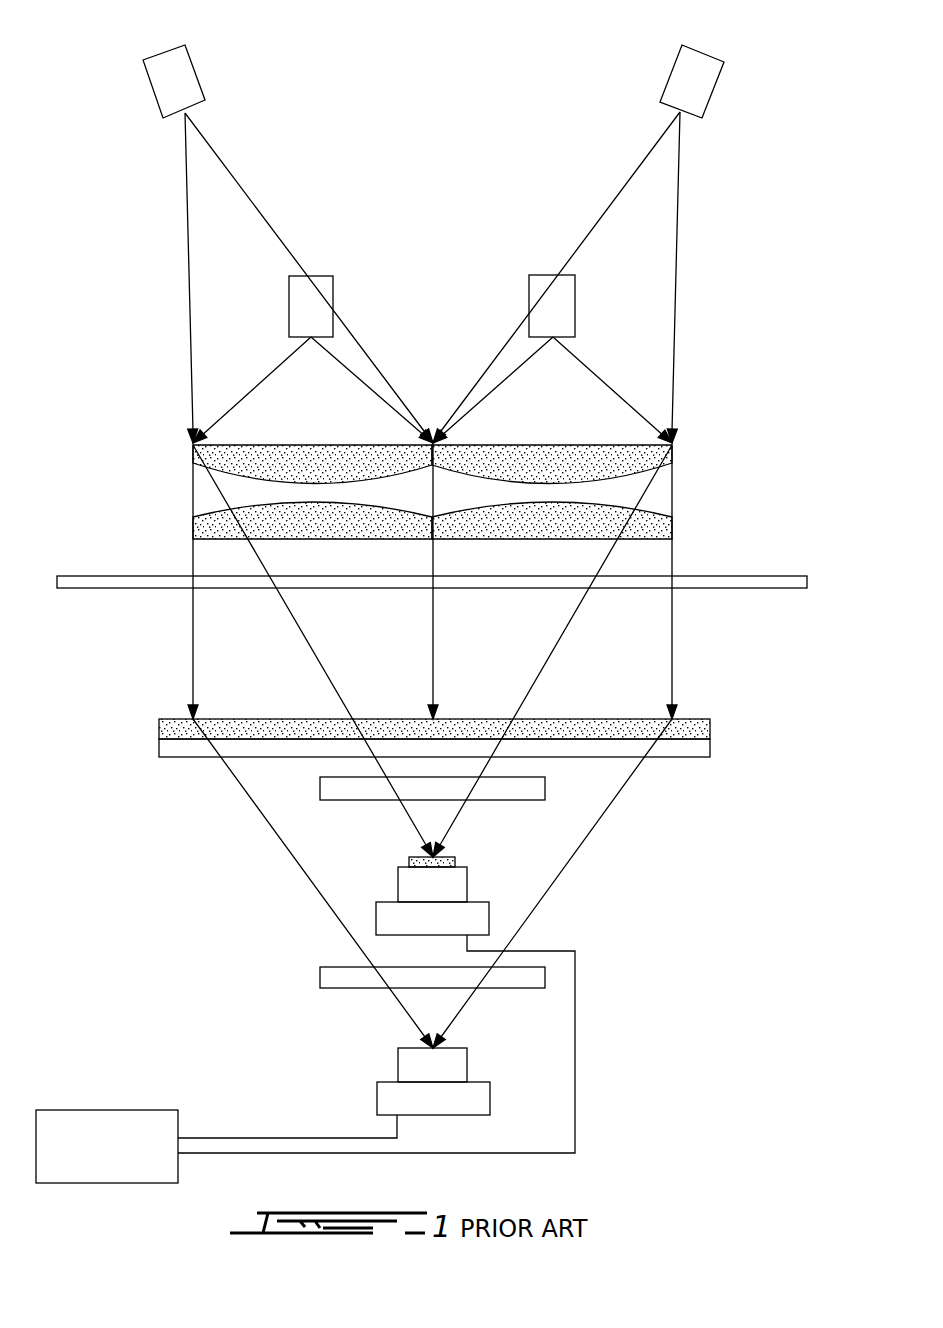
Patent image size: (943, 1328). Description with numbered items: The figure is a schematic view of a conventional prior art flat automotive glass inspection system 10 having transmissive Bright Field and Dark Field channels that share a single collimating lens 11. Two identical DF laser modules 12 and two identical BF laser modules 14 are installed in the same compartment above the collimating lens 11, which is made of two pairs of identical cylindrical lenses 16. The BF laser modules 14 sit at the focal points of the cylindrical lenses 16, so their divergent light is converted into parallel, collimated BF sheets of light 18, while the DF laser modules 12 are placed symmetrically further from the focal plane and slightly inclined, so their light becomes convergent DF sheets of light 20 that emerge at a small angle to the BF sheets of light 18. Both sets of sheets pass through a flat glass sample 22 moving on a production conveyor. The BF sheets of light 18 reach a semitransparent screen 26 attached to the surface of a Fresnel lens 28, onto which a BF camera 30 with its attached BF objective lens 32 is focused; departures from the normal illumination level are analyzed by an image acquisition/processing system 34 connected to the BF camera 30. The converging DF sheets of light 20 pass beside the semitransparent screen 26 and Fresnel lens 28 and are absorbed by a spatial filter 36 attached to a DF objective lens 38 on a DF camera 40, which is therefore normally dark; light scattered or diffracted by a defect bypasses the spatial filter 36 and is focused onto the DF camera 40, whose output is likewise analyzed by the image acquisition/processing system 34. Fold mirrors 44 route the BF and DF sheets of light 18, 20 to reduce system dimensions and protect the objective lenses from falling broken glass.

The glass inspection system 10 is at (745, 172).
The collimating lens 11 is at (436, 466).
The DF laser modules 12 is at (205, 76).
The BF laser modules 14 is at (330, 277).
The cylindrical lenses 16 is at (193, 458).
The BF sheets of light 18 is at (193, 645).
The DF sheets of light 20 is at (288, 615).
The glass sample 22 is at (787, 575).
The semitransparent screen 26 is at (712, 723).
The Fresnel lens 28 is at (712, 747).
The BF camera 30 is at (377, 1097).
The BF objective lens 32 is at (398, 1068).
The image acquisition/processing system 34 is at (87, 1183).
The spatial filter 36 is at (455, 855).
The DF objective lens 38 is at (467, 885).
The DF camera 40 is at (489, 918).
The fold mirrors 44 is at (547, 785).